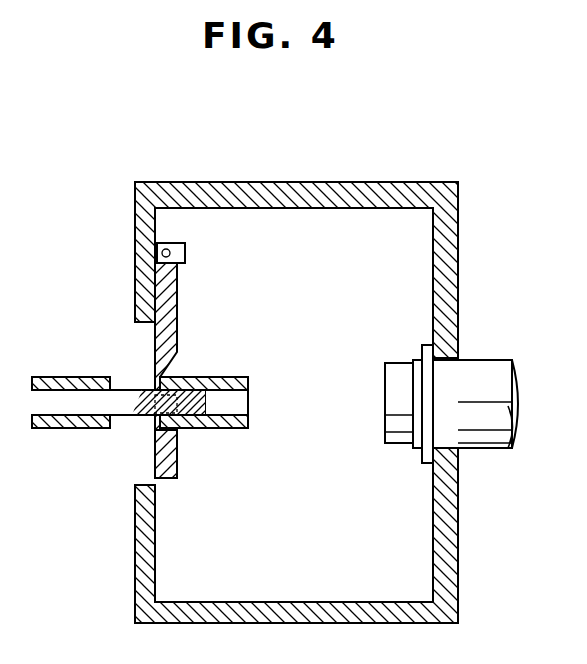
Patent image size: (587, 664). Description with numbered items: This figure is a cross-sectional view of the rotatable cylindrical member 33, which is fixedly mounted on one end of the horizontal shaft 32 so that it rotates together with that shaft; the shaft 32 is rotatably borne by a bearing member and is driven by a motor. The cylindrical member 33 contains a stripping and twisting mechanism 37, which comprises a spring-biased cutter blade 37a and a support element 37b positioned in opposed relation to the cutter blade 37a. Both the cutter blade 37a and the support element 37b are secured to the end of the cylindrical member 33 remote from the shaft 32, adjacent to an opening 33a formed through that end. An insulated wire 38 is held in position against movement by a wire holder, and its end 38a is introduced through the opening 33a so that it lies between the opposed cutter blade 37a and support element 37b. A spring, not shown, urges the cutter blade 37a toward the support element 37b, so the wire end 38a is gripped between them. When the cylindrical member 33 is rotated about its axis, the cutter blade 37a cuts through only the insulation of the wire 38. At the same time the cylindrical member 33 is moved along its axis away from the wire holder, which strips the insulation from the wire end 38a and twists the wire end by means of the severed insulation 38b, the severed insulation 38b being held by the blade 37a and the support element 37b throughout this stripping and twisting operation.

The shaft 32 is at (487, 373).
The rotatable cylindrical member 33 is at (287, 190).
The opening 33a is at (136, 327).
The stripping and twisting mechanism 37 is at (219, 384).
The cutter blade 37a is at (172, 293).
The support element 37b is at (170, 462).
The insulated wire 38 is at (159, 406).
The wire end 38a is at (135, 408).
The severed insulation 38b is at (228, 427).